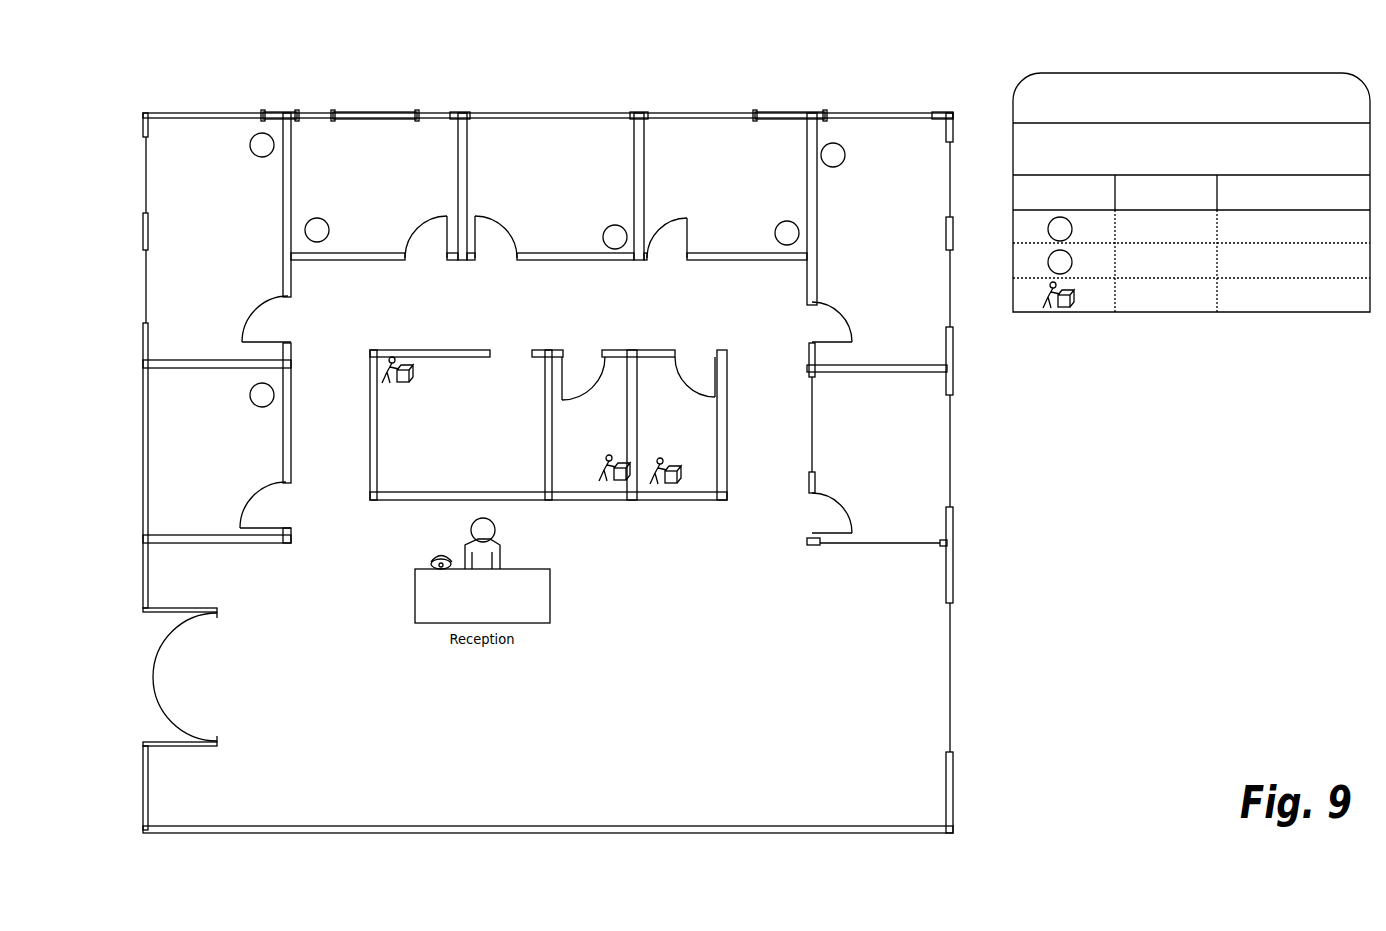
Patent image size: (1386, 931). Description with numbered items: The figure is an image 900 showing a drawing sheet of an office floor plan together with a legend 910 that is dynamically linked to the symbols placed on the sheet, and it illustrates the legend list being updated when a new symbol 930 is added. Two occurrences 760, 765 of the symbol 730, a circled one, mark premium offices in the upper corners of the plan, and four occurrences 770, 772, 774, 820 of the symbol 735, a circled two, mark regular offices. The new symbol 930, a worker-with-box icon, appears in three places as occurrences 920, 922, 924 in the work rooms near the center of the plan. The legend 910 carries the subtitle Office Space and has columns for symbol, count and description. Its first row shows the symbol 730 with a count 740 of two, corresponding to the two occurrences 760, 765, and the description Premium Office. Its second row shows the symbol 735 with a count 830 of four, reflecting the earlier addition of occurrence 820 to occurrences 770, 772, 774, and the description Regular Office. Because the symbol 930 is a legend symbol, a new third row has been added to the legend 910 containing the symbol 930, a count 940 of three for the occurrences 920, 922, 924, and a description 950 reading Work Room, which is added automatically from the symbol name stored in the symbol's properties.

The image 900 is at (548, 433).
The occurrence of symbol 760 is at (253, 137).
The occurrence of symbol 765 is at (825, 145).
The occurrence of symbol 770 is at (273, 390).
The occurrence of symbol 772 is at (325, 222).
The occurrence of symbol 774 is at (606, 228).
The occurrence of symbol 820 is at (780, 223).
The occurrence of symbol 920 is at (405, 380).
The occurrence of symbol 922 is at (613, 457).
The occurrence of symbol 924 is at (663, 462).
The legend 910 is at (1156, 237).
The symbol 730 is at (1050, 222).
The symbol 735 is at (1049, 258).
The symbol 930 is at (1043, 293).
The count 740 is at (1142, 230).
The count 830 is at (1142, 262).
The count 940 is at (1142, 295).
The description 950 is at (1228, 295).